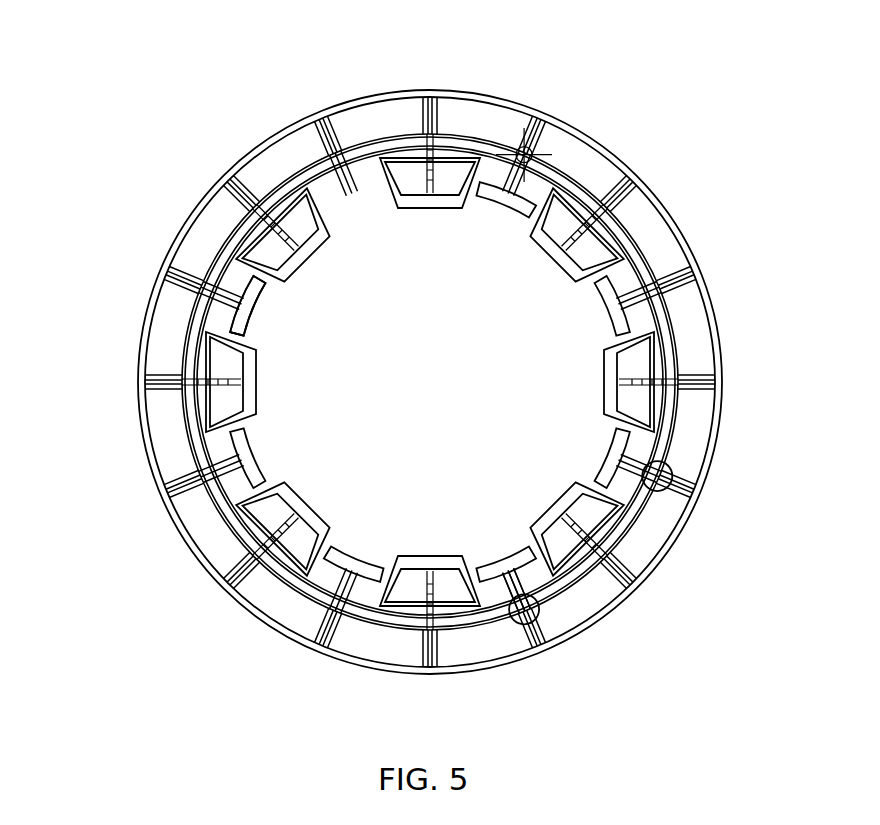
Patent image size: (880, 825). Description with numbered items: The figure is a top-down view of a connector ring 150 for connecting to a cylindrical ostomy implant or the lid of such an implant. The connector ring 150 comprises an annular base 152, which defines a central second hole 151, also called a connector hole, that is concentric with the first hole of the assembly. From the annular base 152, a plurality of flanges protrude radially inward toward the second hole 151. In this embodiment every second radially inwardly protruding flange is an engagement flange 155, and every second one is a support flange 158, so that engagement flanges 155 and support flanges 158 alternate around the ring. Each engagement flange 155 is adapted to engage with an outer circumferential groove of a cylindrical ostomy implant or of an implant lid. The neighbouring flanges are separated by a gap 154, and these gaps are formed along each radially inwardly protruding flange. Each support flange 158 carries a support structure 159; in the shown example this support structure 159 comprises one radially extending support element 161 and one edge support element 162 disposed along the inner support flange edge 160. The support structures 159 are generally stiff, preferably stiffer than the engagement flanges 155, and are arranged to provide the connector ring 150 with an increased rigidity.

The connector ring 150 is at (187, 165).
The second hole 151 is at (449, 292).
The annular base 152 is at (587, 162).
The gap 154 is at (602, 270).
The engagement flange 155 is at (220, 402).
The support flange 158 is at (220, 312).
The support structure 159 is at (212, 293).
The inner support flange edge 160 is at (257, 322).
The radially extending support element 161 is at (205, 272).
The edge support element 162 is at (247, 306).